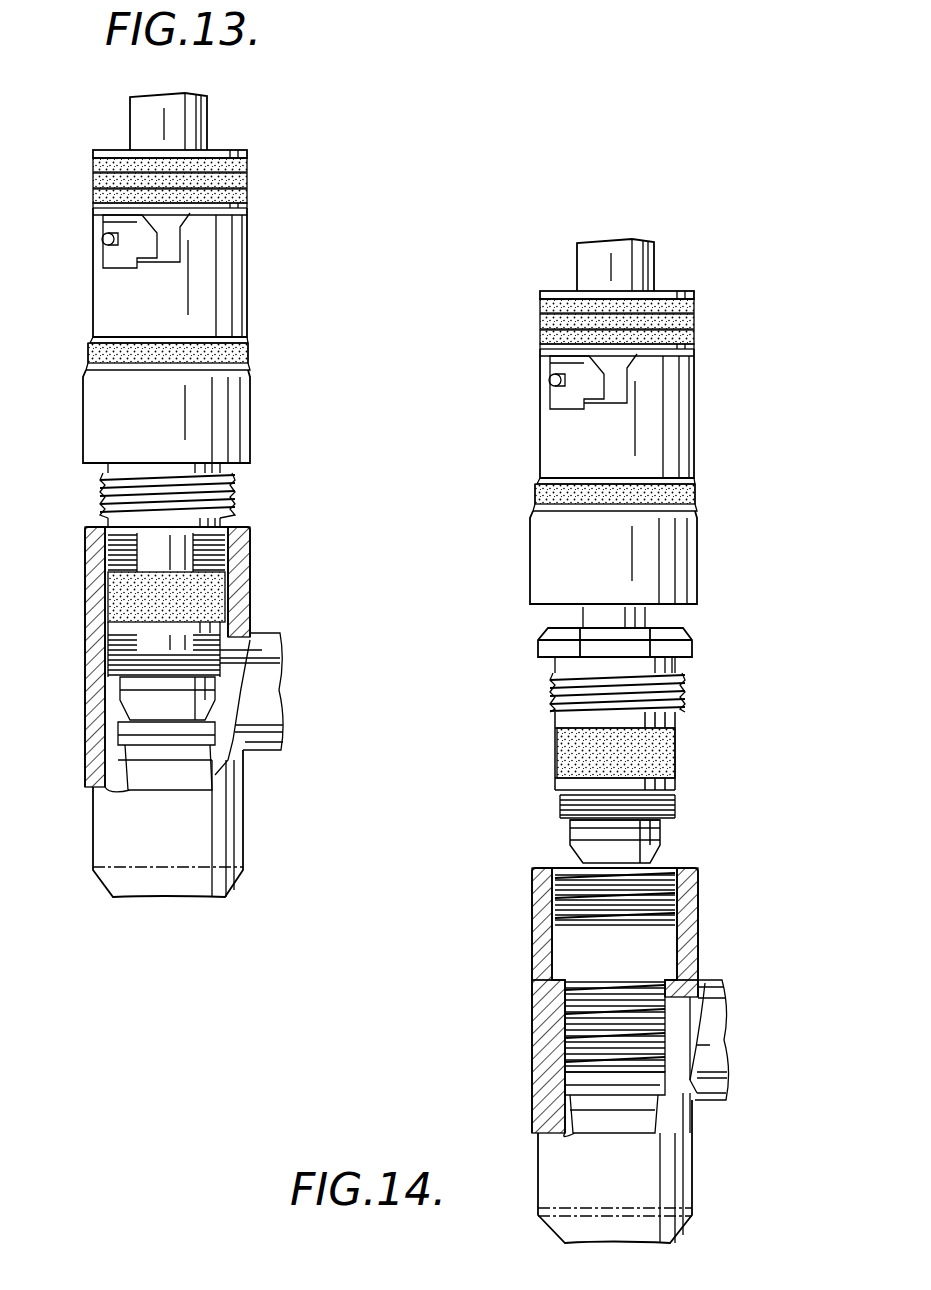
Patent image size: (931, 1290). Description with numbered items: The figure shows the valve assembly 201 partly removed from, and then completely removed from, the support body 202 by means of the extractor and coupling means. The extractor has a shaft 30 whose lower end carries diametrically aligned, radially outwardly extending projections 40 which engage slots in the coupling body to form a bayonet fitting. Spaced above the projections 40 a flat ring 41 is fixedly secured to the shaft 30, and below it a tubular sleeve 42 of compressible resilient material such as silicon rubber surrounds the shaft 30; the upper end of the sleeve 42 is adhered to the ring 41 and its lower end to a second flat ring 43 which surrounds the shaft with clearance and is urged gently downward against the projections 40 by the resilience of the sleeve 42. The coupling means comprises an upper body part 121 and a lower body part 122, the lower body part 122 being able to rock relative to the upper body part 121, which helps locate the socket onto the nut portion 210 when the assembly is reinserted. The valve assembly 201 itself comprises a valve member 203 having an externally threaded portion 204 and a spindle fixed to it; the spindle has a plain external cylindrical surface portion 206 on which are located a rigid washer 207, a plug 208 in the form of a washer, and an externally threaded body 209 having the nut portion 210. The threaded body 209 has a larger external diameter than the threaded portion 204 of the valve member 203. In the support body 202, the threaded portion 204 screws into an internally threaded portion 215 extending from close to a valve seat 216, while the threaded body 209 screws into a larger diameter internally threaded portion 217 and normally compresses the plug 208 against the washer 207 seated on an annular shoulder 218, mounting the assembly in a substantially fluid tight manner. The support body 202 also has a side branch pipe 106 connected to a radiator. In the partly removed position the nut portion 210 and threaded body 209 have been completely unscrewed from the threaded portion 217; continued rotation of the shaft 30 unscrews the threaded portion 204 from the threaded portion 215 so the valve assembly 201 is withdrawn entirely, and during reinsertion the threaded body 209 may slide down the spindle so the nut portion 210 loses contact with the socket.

In FIG. 13, the shaft 30 is at (188, 133).
In FIG. 14, the shaft 30 is at (651, 263).
In FIG. 13, the flat ring 41 is at (230, 153).
In FIG. 14, the flat ring 41 is at (641, 308).
In FIG. 13, the tubular sleeve 42 is at (248, 183).
In FIG. 14, the tubular sleeve 42 is at (645, 321).
In FIG. 13, the second flat ring 43 is at (98, 210).
In FIG. 14, the second flat ring 43 is at (561, 366).
In FIG. 13, the projections 40 is at (102, 243).
In FIG. 14, the projections 40 is at (522, 384).
In FIG. 13, the upper body part 121 is at (252, 283).
In FIG. 14, the upper body part 121 is at (646, 430).
In FIG. 13, the lower body part 122 is at (82, 442).
In FIG. 14, the lower body part 122 is at (646, 546).
In FIG. 13, the externally threaded body 209 is at (215, 493).
In FIG. 14, the externally threaded body 209 is at (567, 667).
In FIG. 14, the nut portion 210 is at (680, 645).
In FIG. 14, the valve assembly 201 is at (700, 722).
In FIG. 13, the plain external cylindrical surface portion 206 is at (228, 598).
In FIG. 14, the plain external cylindrical surface portion 206 is at (590, 746).
In FIG. 14, the plug 208 is at (668, 757).
In FIG. 14, the rigid washer 207 is at (668, 792).
In FIG. 14, the annular shoulder 218 is at (552, 798).
In FIG. 13, the externally threaded portion 204 is at (222, 684).
In FIG. 14, the externally threaded portion 204 is at (565, 807).
In FIG. 13, the valve member 203 is at (130, 688).
In FIG. 14, the valve member 203 is at (580, 833).
In FIG. 13, the larger diameter internally threaded portion 217 is at (103, 550).
In FIG. 14, the larger diameter internally threaded portion 217 is at (650, 895).
In FIG. 14, the side branch pipe 106 is at (718, 1010).
In FIG. 13, the internally threaded portion 215 is at (113, 725).
In FIG. 14, the internally threaded portion 215 is at (580, 1040).
In FIG. 14, the valve seat 216 is at (650, 1110).
In FIG. 13, the support body 202 is at (110, 838).
In FIG. 14, the support body 202 is at (538, 978).